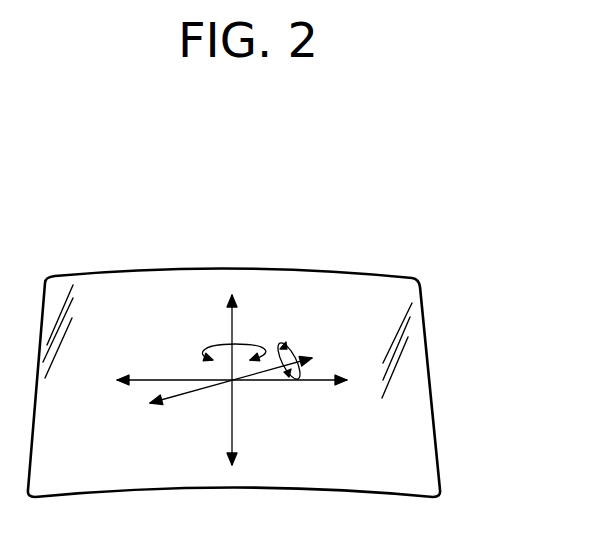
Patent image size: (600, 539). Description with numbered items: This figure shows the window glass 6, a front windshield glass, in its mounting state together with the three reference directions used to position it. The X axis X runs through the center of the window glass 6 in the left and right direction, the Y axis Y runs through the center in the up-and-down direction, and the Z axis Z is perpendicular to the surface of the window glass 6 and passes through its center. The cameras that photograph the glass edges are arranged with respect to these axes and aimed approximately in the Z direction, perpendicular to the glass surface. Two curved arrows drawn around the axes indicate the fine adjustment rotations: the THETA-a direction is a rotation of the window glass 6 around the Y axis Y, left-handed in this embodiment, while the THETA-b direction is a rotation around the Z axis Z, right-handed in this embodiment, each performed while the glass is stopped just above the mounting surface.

The window glass 6 is at (410, 382).
The X axis X is at (143, 382).
The Y axis Y is at (233, 322).
The Z axis Z is at (197, 388).